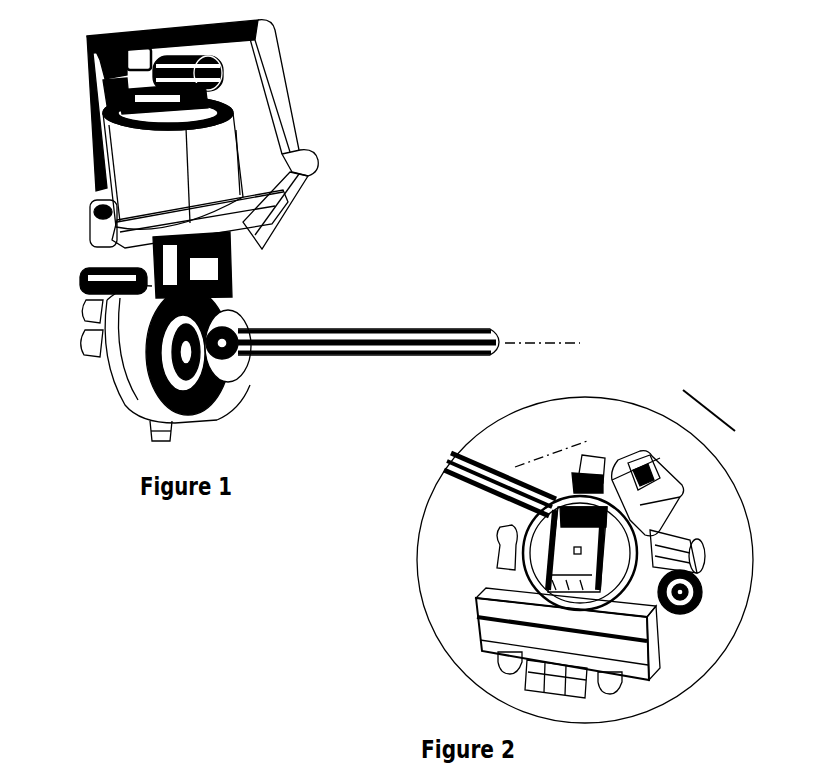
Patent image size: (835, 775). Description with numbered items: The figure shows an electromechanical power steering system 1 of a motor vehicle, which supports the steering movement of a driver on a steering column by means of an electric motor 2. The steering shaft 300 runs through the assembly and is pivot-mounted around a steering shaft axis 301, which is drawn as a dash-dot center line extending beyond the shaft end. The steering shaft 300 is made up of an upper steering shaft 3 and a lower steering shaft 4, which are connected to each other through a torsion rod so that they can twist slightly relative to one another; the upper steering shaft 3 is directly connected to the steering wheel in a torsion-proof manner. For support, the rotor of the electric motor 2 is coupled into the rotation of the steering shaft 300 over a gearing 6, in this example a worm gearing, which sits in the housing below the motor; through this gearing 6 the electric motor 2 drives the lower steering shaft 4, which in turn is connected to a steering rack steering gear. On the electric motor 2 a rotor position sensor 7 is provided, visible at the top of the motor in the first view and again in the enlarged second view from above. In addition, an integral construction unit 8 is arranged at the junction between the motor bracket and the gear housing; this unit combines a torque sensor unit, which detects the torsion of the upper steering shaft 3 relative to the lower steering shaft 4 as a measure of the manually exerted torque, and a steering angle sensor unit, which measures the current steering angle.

In FIG. 1, the electromagnetic power steering system 1 is at (383, 131).
In FIG. 1, the electric motor 2 is at (214, 176).
In FIG. 2, the electric motor 2 is at (640, 600).
In FIG. 1, the upper steering shaft 3 is at (406, 336).
In FIG. 2, the upper steering shaft 3 is at (627, 428).
In FIG. 1, the lower steering shaft 4 is at (97, 348).
In FIG. 2, the lower steering shaft 4 is at (655, 540).
In FIG. 1, the gearing 6 is at (218, 403).
In FIG. 1, the rotor position sensor 7 is at (228, 68).
In FIG. 2, the rotor position sensor 7 is at (592, 552).
In FIG. 1, the integral construction unit 8 is at (240, 289).
In FIG. 1, the steering shaft 300 is at (371, 317).
In FIG. 2, the steering shaft 300 is at (713, 412).
In FIG. 1, the steering shaft axis 301 is at (540, 341).